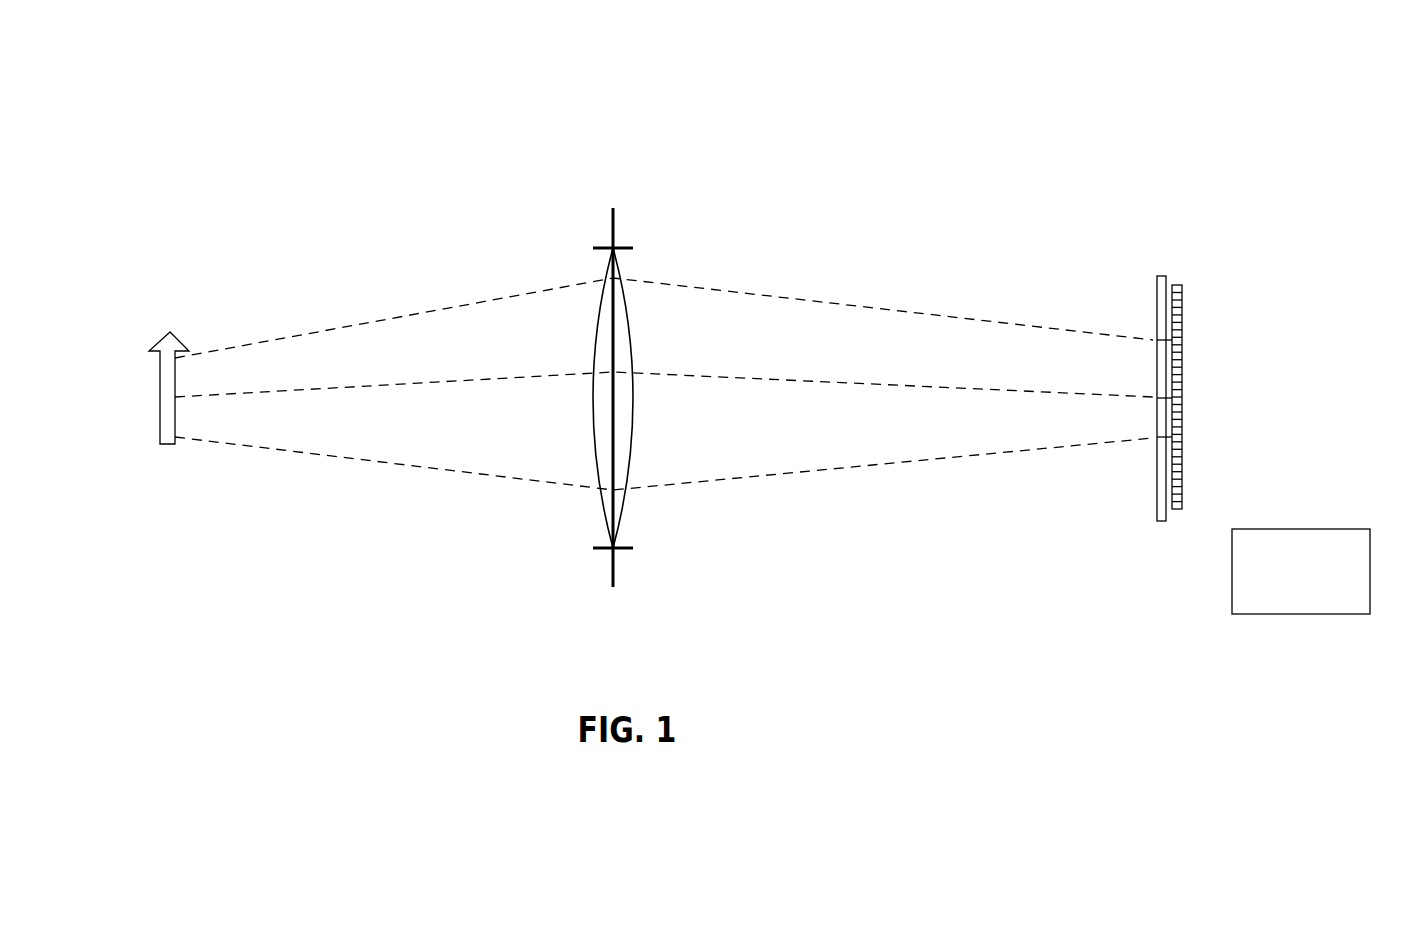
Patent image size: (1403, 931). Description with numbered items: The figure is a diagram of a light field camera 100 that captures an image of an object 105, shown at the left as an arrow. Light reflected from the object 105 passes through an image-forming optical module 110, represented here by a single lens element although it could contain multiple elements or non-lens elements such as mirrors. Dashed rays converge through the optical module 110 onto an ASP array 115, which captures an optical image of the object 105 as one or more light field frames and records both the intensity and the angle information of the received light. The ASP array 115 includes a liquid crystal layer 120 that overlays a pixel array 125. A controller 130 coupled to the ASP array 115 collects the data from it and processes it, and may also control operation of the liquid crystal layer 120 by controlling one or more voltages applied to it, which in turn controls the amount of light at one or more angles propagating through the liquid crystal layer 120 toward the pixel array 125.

The light field camera 100 is at (138, 100).
The object 105 is at (190, 321).
The optical module 110 is at (563, 222).
The ASP array 115 is at (1163, 252).
The liquid crystal layer 120 is at (1150, 530).
The pixel array 125 is at (1195, 350).
The controller 130 is at (1182, 493).